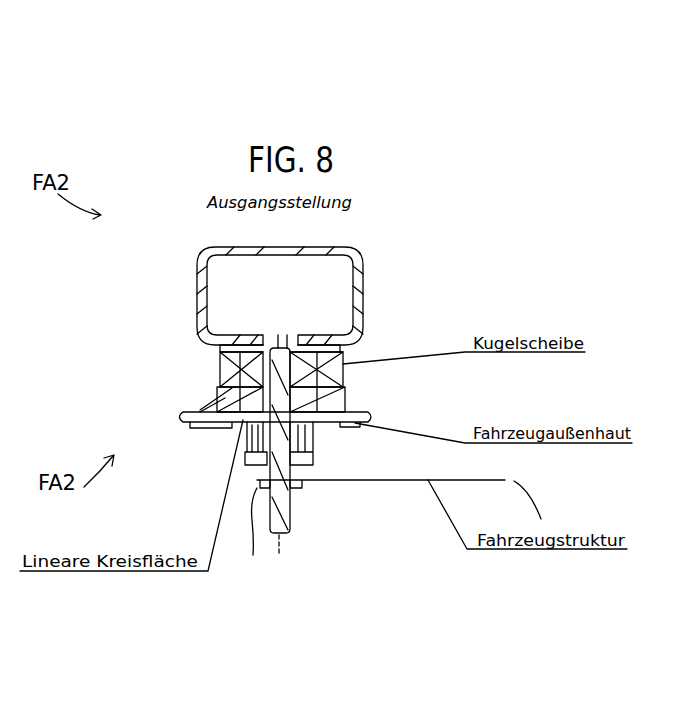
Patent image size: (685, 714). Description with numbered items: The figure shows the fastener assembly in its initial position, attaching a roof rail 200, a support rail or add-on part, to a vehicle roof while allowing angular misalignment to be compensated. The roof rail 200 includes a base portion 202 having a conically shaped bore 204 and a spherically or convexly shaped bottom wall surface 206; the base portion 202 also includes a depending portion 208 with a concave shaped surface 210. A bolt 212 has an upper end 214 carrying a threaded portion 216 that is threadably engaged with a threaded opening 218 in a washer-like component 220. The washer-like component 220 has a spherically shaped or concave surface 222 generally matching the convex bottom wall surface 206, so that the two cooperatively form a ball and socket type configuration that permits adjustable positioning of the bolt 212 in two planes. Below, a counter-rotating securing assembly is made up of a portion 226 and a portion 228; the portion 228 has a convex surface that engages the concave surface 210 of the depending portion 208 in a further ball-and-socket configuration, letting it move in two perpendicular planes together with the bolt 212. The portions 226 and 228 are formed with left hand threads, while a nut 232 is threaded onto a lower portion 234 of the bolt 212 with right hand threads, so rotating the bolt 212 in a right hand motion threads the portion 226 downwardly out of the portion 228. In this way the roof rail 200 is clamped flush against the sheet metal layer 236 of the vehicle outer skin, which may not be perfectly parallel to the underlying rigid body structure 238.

The roof rail 200 is at (389, 320).
The base portion 202 is at (320, 370).
The conically shaped bore 204 is at (218, 390).
The spherically or convexly shaped bottom wall surface 206 is at (222, 380).
The depending portion 208 is at (318, 428).
The concave shaped surface 210 is at (381, 498).
The bolt 212 is at (327, 528).
The upper end 214 is at (277, 345).
The threaded portion 216 is at (197, 340).
The threaded opening 218 is at (330, 350).
The washer-like component 220 is at (217, 340).
The spherically shaped or concave surface 222 is at (348, 406).
The portion of counter-rotating securing assembly 226 is at (268, 467).
The portion of counter-rotating securing assembly 228 is at (255, 448).
The nut 232 is at (262, 544).
The lower portion 234 is at (328, 562).
The sheet metal layer 236 is at (198, 412).
The rigid body structure 238 is at (505, 480).